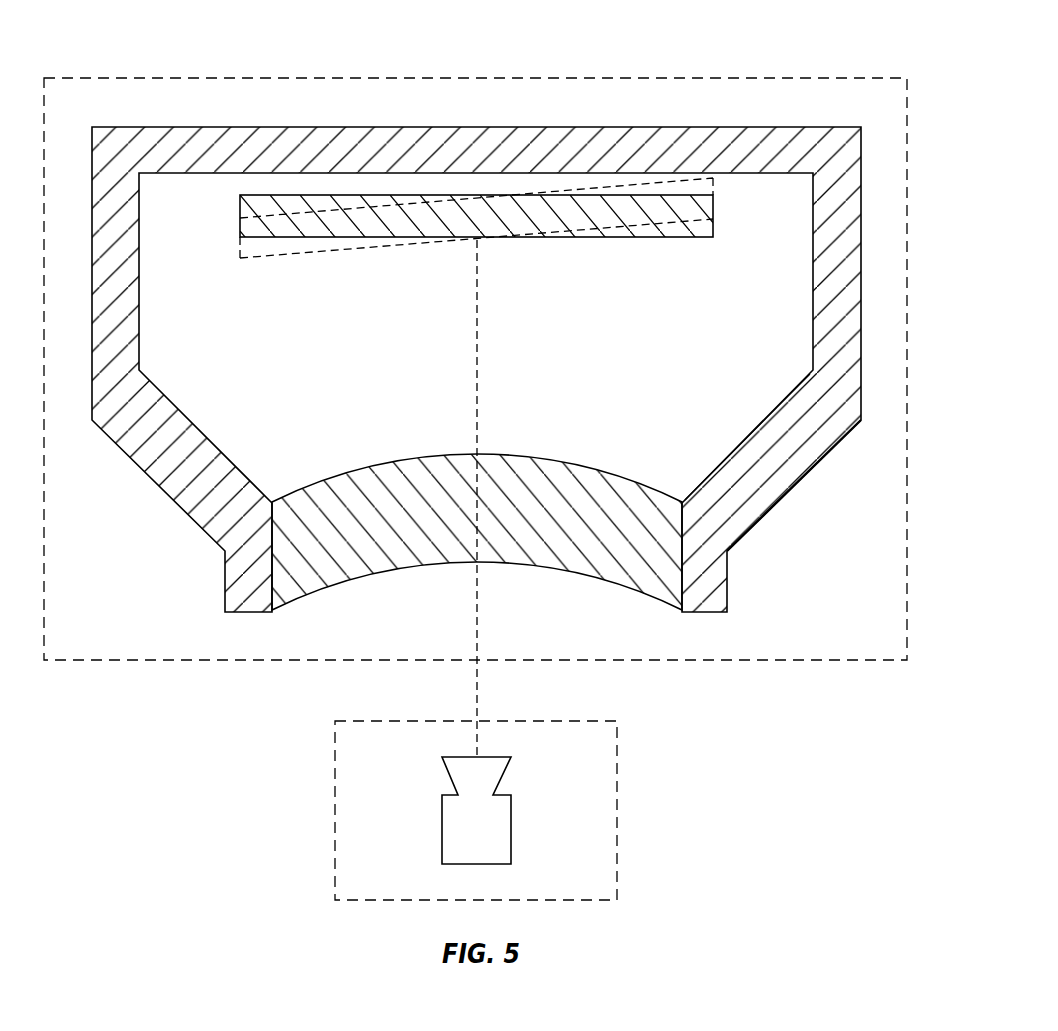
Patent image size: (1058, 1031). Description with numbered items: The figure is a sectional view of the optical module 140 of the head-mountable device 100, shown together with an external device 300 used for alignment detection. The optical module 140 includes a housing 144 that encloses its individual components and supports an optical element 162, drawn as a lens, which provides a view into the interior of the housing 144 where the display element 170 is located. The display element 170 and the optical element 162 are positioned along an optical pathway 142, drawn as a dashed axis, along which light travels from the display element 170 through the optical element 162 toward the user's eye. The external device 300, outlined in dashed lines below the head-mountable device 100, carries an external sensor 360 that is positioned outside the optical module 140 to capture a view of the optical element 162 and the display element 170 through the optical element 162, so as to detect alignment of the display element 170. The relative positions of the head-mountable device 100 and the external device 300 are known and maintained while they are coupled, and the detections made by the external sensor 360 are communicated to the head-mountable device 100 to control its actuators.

The head-mountable device 100 is at (76, 78).
The optical module 140 is at (213, 127).
The optical pathway 142 is at (477, 691).
The housing 144 is at (833, 230).
The optical element 162 is at (565, 550).
The display element 170 is at (692, 240).
The external device 300 is at (618, 800).
The external sensor 360 is at (441, 827).